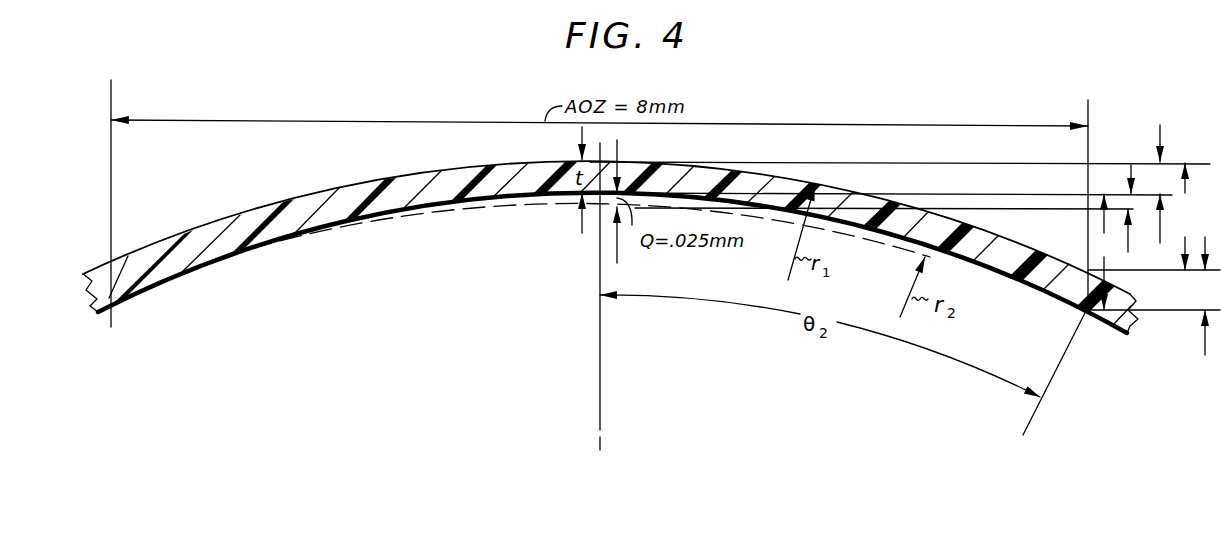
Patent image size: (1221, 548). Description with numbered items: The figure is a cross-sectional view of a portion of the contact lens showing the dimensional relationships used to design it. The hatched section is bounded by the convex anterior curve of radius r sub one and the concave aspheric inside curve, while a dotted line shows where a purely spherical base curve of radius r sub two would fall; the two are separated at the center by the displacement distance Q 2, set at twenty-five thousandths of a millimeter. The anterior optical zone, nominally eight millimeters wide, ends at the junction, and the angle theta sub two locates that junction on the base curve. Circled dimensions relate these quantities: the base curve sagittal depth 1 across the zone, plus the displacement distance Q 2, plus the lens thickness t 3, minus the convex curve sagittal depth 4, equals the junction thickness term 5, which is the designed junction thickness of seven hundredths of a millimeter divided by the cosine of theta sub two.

The base curve sagittal depth 1 is at (1104, 252).
The displacement distance Q 2 is at (1133, 209).
The lens thickness t 3 is at (1149, 159).
The convex curve sagittal depth 4 is at (1185, 216).
The junction thickness term 5 is at (1205, 296).